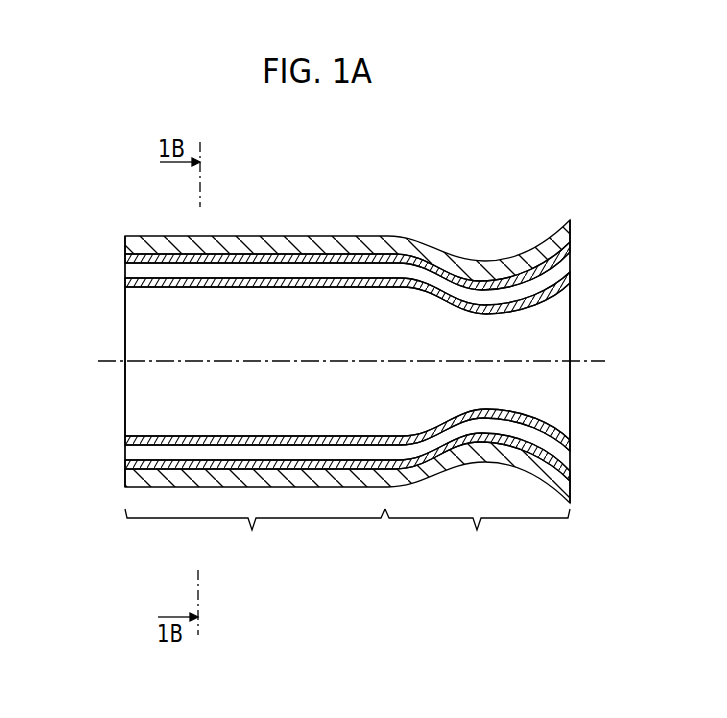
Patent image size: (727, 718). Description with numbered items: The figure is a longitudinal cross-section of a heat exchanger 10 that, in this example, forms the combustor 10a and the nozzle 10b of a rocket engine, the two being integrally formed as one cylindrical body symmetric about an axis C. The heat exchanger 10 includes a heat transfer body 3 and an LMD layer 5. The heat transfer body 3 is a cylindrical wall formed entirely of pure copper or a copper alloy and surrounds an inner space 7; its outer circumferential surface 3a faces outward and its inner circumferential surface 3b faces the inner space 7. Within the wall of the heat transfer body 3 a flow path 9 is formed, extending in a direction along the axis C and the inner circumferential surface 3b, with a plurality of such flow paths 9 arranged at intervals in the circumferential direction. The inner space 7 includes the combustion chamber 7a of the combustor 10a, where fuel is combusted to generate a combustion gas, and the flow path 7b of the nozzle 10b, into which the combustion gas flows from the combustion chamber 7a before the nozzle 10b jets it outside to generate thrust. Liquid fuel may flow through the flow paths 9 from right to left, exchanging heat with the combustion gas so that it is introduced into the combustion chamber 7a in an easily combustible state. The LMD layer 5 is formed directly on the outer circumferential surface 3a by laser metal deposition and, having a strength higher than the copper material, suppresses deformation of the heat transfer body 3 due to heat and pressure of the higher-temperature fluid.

The heat exchanger 10 is at (88, 196).
The combustor 10a is at (255, 402).
The nozzle 10b is at (477, 394).
The LMD layer 5 is at (176, 247).
The heat transfer body 3 is at (331, 247).
The outer circumferential surface 3a is at (250, 255).
The inner circumferential surface 3b is at (281, 289).
The flow path 9 is at (300, 270).
The inner space 7 is at (155, 330).
The combustion chamber 7a is at (246, 337).
The flow path of the nozzle 7b is at (543, 399).
The axis C is at (360, 363).